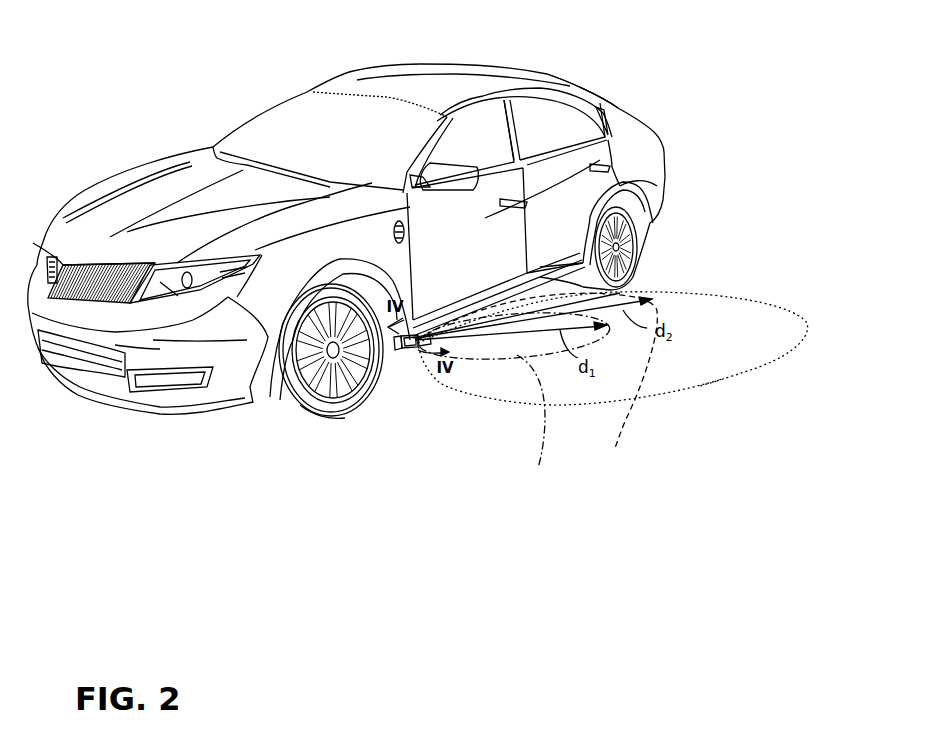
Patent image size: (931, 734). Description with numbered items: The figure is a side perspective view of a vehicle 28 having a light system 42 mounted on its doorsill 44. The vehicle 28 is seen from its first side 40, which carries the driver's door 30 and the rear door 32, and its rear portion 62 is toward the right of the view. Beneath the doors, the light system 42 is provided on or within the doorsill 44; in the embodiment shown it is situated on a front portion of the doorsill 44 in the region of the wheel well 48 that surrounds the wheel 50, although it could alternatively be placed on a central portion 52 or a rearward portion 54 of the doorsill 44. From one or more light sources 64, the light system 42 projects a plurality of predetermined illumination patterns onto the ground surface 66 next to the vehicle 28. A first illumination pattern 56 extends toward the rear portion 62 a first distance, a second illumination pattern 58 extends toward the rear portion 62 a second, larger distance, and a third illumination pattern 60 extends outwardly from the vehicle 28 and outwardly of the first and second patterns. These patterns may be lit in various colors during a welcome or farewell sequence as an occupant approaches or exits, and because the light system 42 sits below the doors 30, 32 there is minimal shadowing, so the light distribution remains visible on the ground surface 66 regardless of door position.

The vehicle 28 is at (489, 64).
The driver's door 30 is at (482, 218).
The rear door 32 is at (593, 157).
The first side 40 is at (646, 176).
The light system 42 is at (424, 352).
The doorsill 44 is at (460, 358).
The wheel well 48 is at (387, 405).
The wheel 50 is at (326, 414).
The central portion 52 is at (515, 372).
The rearward portion 54 is at (624, 292).
The first illumination pattern 56 is at (514, 398).
The second illumination pattern 58 is at (537, 381).
The third illumination pattern 60 is at (721, 380).
The rear portion 62 is at (633, 114).
The light sources 64 is at (412, 353).
The ground surface 66 is at (776, 283).